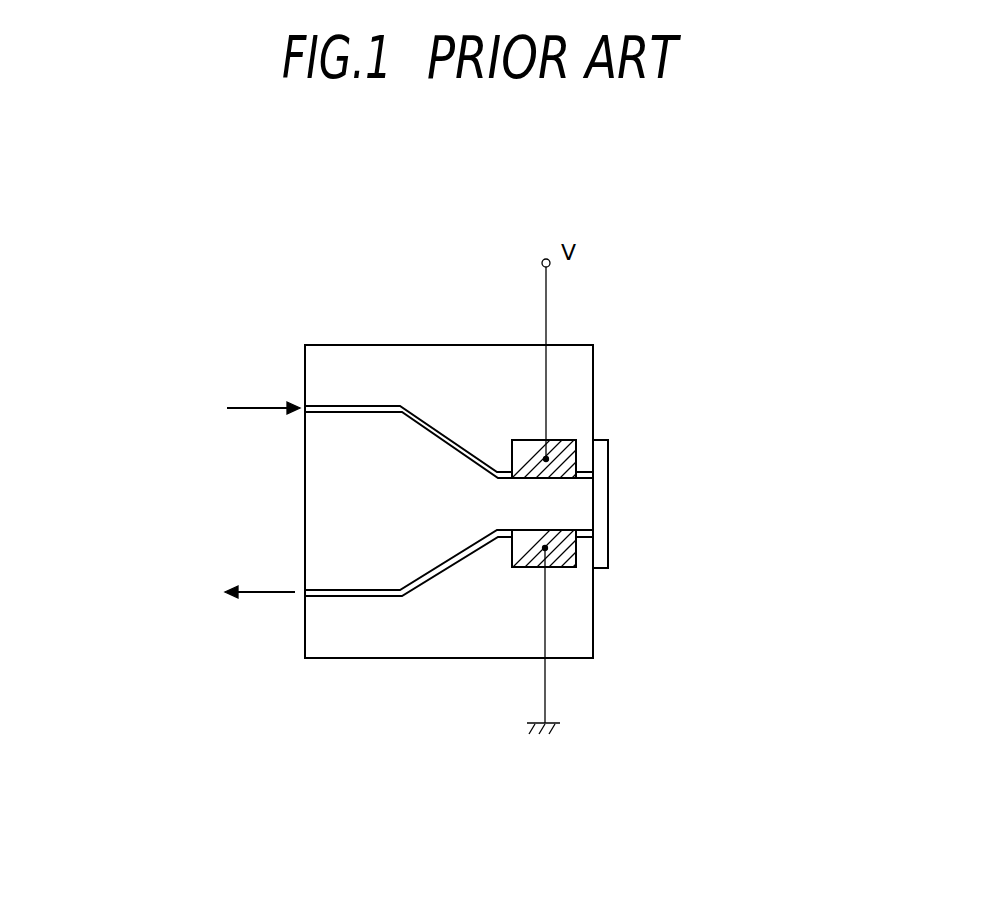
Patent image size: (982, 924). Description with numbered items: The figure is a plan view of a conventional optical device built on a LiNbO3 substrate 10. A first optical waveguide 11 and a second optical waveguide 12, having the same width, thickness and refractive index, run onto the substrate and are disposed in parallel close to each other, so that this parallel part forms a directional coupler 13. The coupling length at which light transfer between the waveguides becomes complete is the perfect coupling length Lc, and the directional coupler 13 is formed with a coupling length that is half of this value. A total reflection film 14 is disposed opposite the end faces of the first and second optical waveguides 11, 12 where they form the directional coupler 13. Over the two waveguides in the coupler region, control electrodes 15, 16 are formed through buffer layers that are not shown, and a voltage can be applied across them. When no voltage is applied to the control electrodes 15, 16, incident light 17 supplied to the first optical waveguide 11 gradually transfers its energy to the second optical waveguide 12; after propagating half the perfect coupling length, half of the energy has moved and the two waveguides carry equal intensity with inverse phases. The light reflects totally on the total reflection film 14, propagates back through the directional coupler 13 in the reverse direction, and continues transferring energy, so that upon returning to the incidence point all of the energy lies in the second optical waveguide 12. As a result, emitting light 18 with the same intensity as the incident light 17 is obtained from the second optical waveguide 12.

The LiNbO3 substrate 10 is at (573, 345).
The first optical waveguide 11 is at (390, 405).
The second optical waveguide 12 is at (398, 597).
The directional coupler 13 is at (583, 510).
The total reflection film 14 is at (607, 440).
The control electrode 15 is at (520, 440).
The control electrode 16 is at (565, 567).
The incident light 17 is at (270, 405).
The emitting light 18 is at (270, 588).